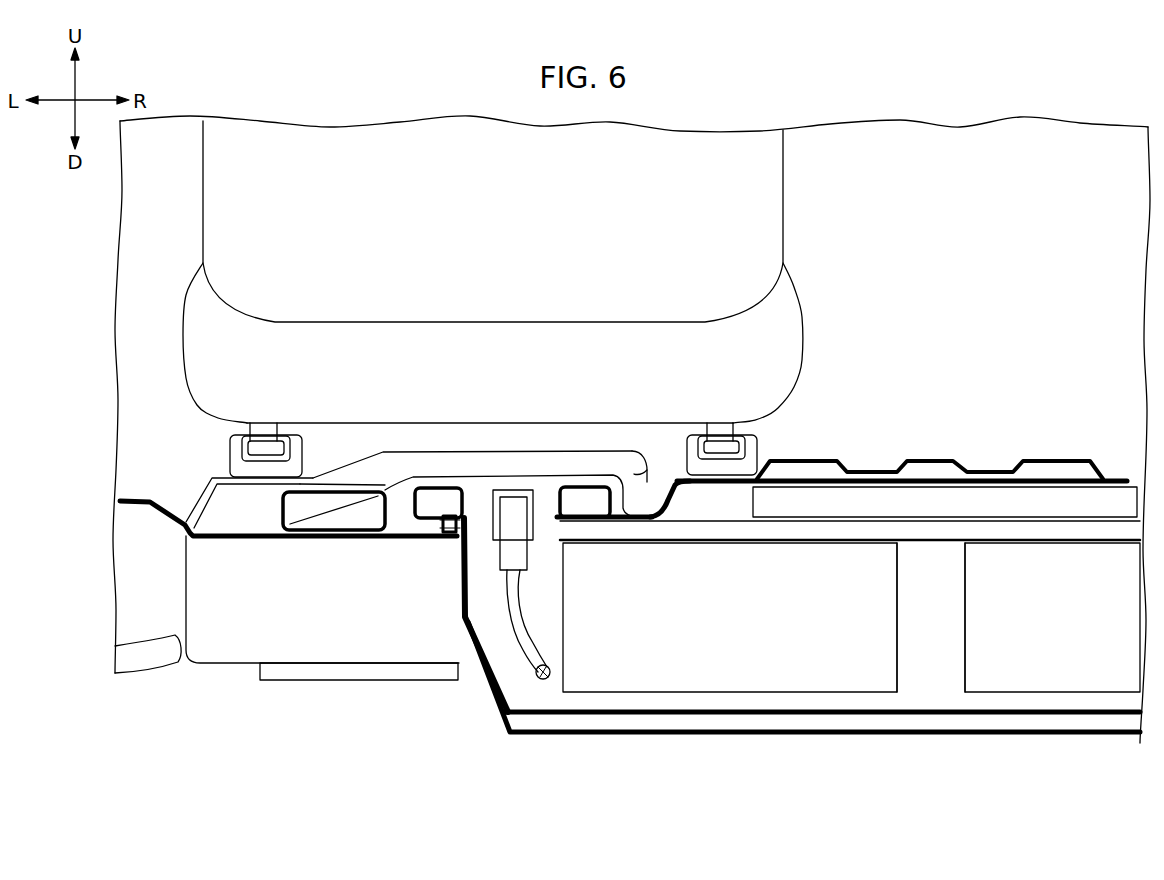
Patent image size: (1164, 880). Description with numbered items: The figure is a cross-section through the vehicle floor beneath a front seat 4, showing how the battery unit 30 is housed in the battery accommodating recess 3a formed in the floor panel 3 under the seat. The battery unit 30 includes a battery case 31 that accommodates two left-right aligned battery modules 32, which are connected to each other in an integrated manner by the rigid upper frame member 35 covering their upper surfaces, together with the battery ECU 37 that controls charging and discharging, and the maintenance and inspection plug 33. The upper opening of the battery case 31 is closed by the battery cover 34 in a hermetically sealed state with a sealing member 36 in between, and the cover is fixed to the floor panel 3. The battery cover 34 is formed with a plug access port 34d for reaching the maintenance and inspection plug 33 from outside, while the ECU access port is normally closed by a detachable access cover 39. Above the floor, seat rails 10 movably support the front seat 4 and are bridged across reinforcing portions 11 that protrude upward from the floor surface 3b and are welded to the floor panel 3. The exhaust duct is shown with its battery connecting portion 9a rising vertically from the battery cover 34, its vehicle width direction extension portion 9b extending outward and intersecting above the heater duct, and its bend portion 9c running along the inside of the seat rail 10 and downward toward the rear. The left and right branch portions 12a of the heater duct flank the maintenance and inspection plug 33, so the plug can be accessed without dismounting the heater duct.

The front seat 4 is at (760, 182).
The seat rail 10 is at (237, 463).
The reinforcing portion 11 is at (207, 490).
The bend portion 9c is at (360, 475).
The vehicle width direction extension portion 9b is at (547, 465).
The battery connecting portion 9a is at (640, 478).
The branch portion 12a is at (437, 486).
The plug access port 34d is at (500, 488).
The sealing member 36 is at (447, 518).
The battery cover 34 is at (677, 495).
The battery unit 30 is at (1054, 458).
The access cover 39 is at (931, 458).
The battery ECU 37 is at (987, 505).
The battery case 31 is at (925, 716).
The battery module 32 is at (801, 657).
The upper frame member 35 is at (926, 548).
The maintenance and inspection plug 33 is at (473, 562).
The battery accommodating recess 3a is at (586, 722).
The floor panel 3 is at (233, 518).
The floor surface 3b is at (359, 671).